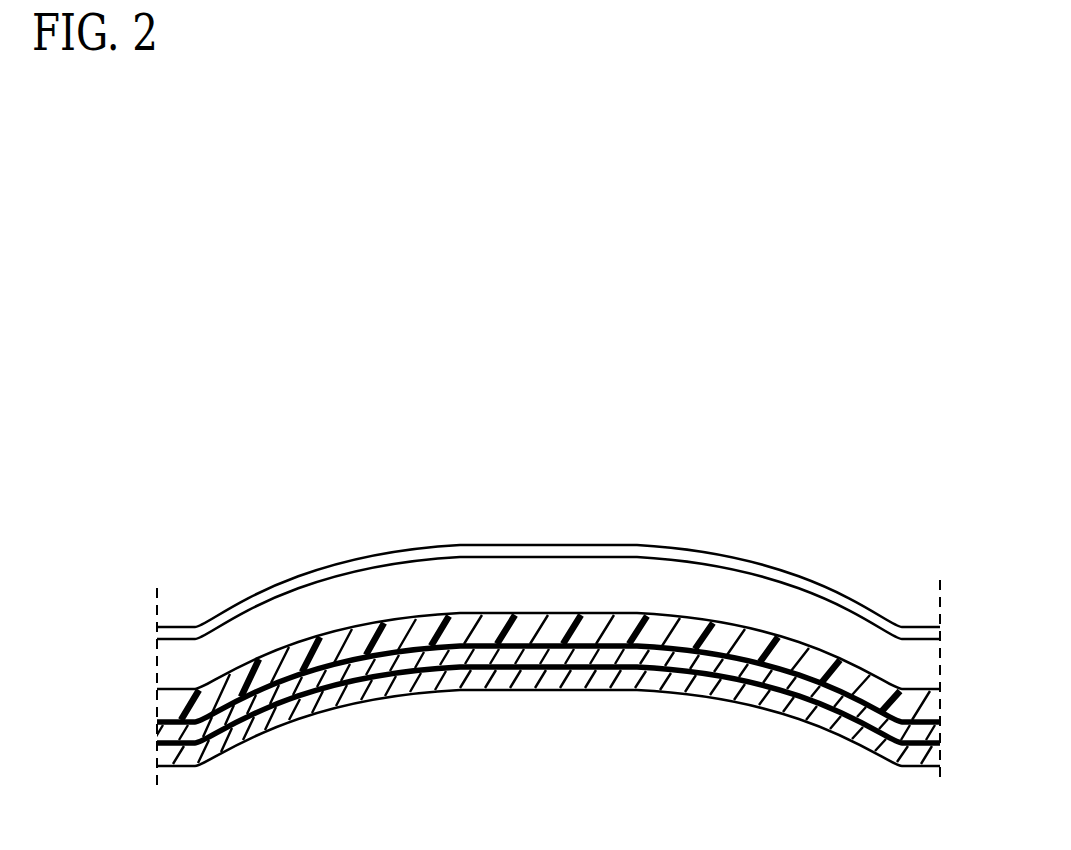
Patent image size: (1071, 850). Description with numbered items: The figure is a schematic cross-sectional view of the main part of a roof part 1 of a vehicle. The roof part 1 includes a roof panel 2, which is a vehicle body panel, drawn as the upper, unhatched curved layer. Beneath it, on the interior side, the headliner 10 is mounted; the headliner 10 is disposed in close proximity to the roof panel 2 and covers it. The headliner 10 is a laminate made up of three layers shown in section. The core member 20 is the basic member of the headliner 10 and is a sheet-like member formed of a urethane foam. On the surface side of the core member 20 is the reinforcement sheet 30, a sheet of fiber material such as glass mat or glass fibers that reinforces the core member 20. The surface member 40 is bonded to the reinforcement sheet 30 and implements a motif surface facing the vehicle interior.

The roof part 1 is at (643, 502).
The roof panel 2 is at (762, 563).
The headliner 10 is at (428, 727).
The core member 20 is at (417, 613).
The reinforcement sheet 30 is at (744, 700).
The surface member 40 is at (656, 668).